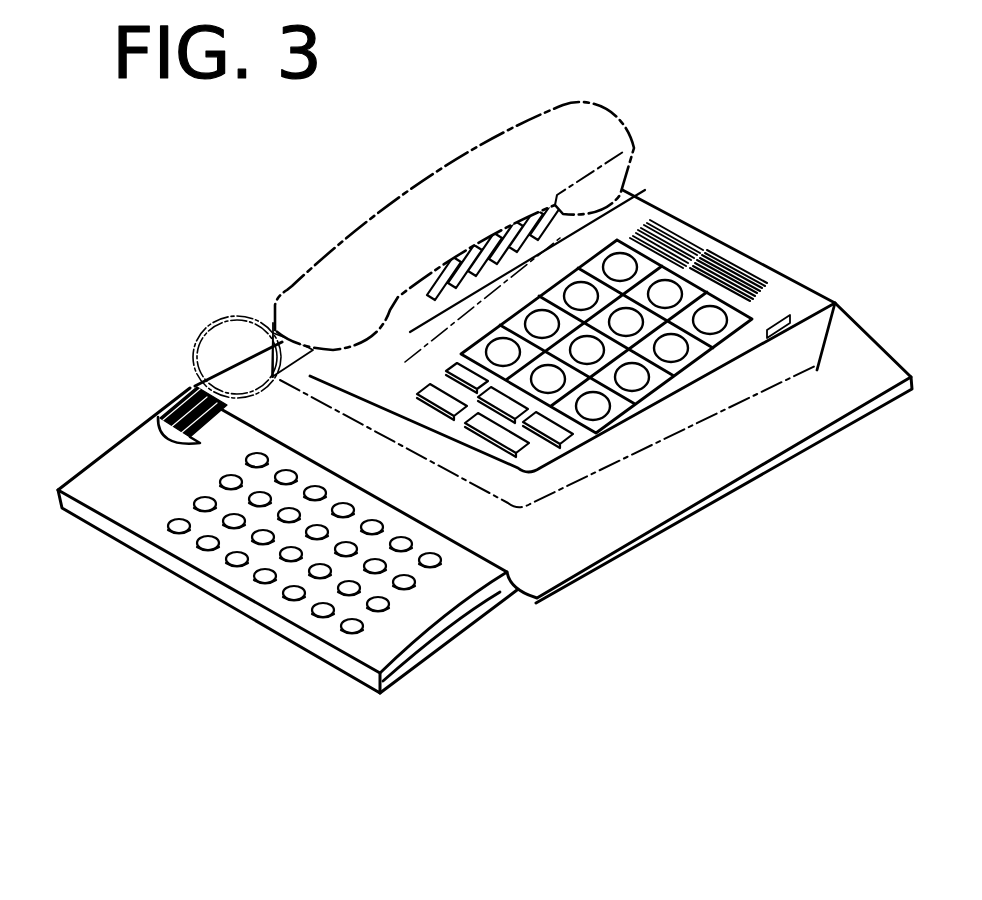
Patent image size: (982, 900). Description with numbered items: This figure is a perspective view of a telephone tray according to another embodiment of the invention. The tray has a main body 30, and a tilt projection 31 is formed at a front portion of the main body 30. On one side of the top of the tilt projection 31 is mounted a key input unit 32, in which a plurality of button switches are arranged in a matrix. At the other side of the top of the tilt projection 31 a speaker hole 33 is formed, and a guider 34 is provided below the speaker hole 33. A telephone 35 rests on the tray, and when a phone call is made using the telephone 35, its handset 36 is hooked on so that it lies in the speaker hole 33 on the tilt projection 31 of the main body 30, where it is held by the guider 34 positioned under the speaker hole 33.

The main body 30 is at (697, 502).
The tilt projection 31 is at (357, 652).
The key input unit 32 is at (228, 573).
The speaker hole 33 is at (172, 393).
The guider 34 is at (157, 430).
The telephone 35 is at (723, 230).
The handset 36 is at (342, 250).